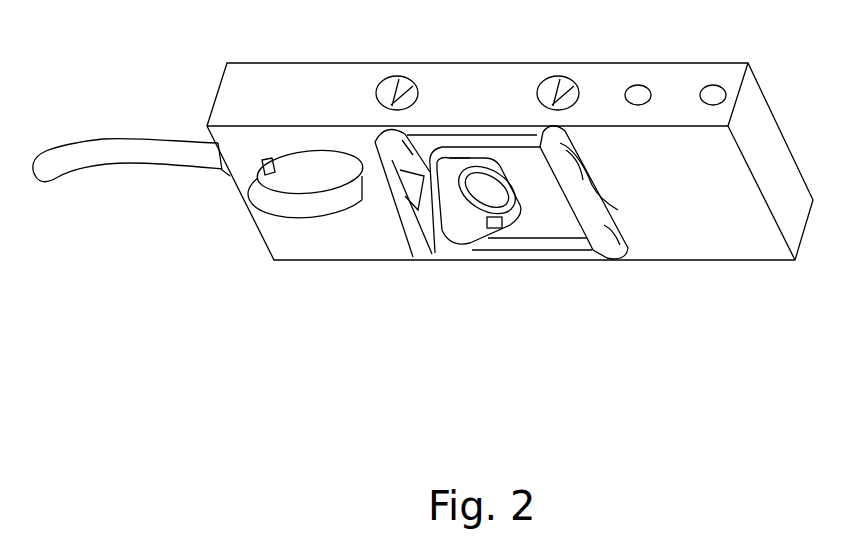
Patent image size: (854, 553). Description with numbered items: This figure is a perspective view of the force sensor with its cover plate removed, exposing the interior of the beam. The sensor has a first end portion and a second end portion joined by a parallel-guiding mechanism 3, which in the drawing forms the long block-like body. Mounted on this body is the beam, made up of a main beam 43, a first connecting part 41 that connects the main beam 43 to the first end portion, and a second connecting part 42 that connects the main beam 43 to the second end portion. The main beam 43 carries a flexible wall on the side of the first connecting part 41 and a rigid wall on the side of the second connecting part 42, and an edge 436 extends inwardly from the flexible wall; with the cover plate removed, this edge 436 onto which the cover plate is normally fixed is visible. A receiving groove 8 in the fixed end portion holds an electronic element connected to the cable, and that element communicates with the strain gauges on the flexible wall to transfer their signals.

The parallel-guiding mechanism 3 is at (466, 85).
The receiving groove 8 is at (296, 194).
The first connecting part 41 is at (432, 233).
The second connecting part 42 is at (593, 214).
The main beam 43 is at (532, 230).
The edge 436 is at (447, 222).